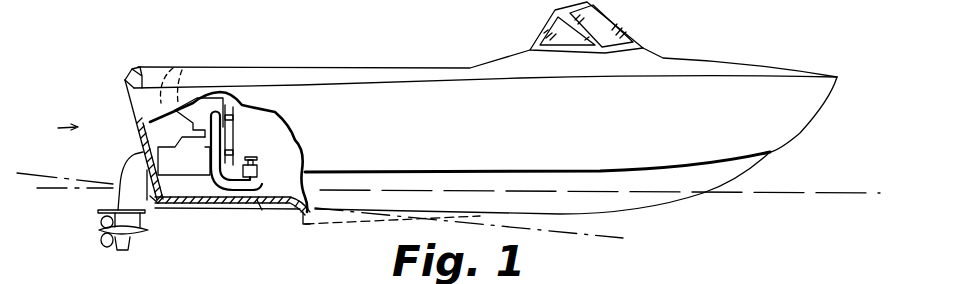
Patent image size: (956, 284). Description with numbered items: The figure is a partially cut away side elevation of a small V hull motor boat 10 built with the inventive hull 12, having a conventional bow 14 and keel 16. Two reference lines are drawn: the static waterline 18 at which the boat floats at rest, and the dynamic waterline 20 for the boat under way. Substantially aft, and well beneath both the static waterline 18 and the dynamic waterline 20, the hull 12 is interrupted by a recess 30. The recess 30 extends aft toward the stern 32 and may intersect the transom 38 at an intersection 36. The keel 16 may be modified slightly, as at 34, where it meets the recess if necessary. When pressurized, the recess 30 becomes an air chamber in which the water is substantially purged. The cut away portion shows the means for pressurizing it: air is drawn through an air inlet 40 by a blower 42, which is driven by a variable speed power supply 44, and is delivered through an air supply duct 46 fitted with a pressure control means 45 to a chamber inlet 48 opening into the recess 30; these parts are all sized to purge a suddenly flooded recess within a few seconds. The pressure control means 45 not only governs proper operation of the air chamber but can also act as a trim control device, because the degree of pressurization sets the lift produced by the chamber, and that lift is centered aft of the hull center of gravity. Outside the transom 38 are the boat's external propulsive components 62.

The motor boat 10 is at (547, 72).
The hull 12 is at (494, 138).
The bow 14 is at (819, 145).
The keel 16 is at (655, 213).
The static waterline 18 is at (797, 193).
The dynamic waterline 20 is at (584, 237).
The recess 30 is at (214, 208).
The stern 32 is at (54, 132).
The keel modification 34 is at (333, 226).
The intersection of recess with transom 36 is at (155, 204).
The transom 38 is at (137, 140).
The air inlet 40 is at (167, 67).
The blower 42 is at (207, 107).
The variable speed power supply 44 is at (235, 133).
The pressure control means 45 is at (259, 172).
The air supply duct 46 is at (213, 158).
The chamber inlet 48 is at (258, 204).
The external propulsive components 62 is at (97, 215).